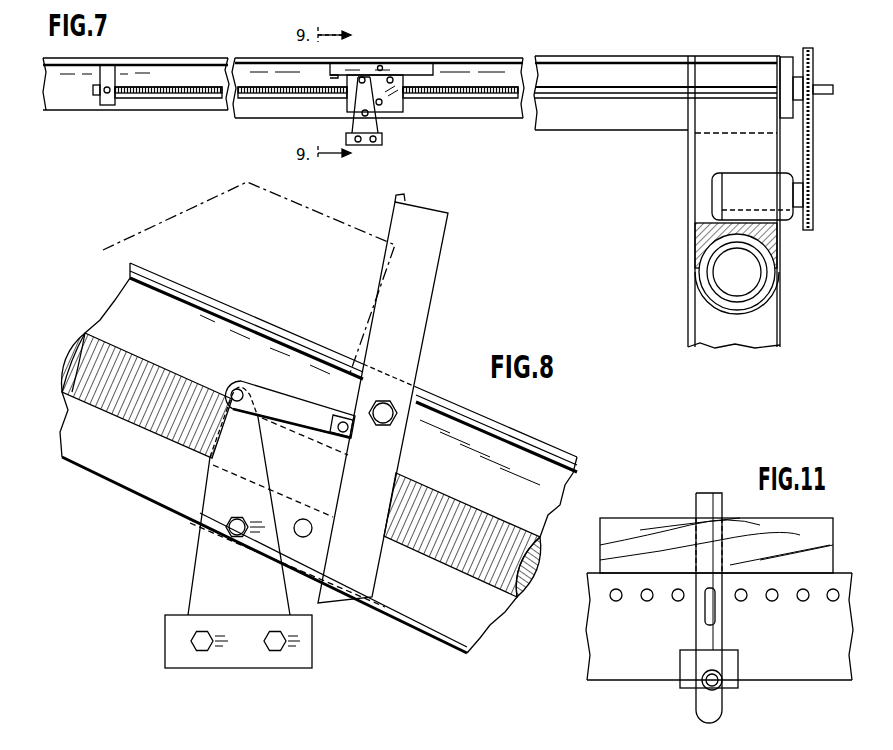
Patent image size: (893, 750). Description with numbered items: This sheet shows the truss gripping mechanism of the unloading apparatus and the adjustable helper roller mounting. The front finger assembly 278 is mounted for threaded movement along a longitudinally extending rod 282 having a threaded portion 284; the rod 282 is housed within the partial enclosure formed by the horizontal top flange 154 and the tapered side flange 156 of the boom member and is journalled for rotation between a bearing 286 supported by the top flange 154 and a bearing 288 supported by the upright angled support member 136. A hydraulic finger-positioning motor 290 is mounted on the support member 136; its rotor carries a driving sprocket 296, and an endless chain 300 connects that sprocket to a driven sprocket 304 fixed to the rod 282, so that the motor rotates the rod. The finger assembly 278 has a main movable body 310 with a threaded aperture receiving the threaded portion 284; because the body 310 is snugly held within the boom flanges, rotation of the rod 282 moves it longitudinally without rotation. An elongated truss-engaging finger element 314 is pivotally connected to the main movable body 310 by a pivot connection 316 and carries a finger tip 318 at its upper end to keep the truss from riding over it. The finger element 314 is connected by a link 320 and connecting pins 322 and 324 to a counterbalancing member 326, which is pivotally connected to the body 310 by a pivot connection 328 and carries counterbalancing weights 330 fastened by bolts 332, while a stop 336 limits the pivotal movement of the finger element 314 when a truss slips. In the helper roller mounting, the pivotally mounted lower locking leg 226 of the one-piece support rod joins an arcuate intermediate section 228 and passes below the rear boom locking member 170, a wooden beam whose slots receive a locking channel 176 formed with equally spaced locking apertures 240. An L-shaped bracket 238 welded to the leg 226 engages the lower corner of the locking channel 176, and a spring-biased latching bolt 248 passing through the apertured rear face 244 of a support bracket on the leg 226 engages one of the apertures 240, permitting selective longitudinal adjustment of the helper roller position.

In FIG. 7, the upright angled support member 136 is at (688, 196).
In FIG. 7, the top flange 154 is at (205, 58).
In FIG. 7, the side flange 156 is at (195, 110).
In FIG. 11, the rear boom locking member 170 is at (600, 550).
In FIG. 11, the locking channel 176 is at (650, 668).
In FIG. 11, the lower locking leg 226 is at (718, 716).
In FIG. 11, the arcuate intermediate section 228 is at (696, 498).
In FIG. 11, the L-shaped bracket 238 is at (738, 690).
In FIG. 11, the locking apertures 240 is at (660, 612).
In FIG. 11, the apertured rear face 244 is at (724, 642).
In FIG. 11, the latching bolt 248 is at (724, 598).
In FIG. 7, the front finger assembly 278 is at (400, 128).
In FIG. 7, the longitudinally extending rod 282 is at (575, 72).
In FIG. 7, the threaded portion 284 is at (452, 88).
In FIG. 8, the threaded portion 284 is at (513, 600).
In FIG. 7, the bearing 286 is at (108, 105).
In FIG. 7, the bearing 288 is at (795, 57).
In FIG. 7, the front hydraulic finger-positioning motor 290 is at (742, 173).
In FIG. 7, the driving sprocket 296 is at (810, 208).
In FIG. 7, the endless chain 300 is at (813, 150).
In FIG. 7, the driven sprocket 304 is at (812, 80).
In FIG. 7, the main movable body 310 is at (405, 96).
In FIG. 8, the main movable body 310 is at (388, 578).
In FIG. 7, the elongated truss-engaging finger element 314 is at (360, 72).
In FIG. 8, the elongated truss-engaging finger element 314 is at (428, 330).
In FIG. 7, the pivot connection 316 is at (382, 68).
In FIG. 8, the pivot connection 316 is at (395, 405).
In FIG. 7, the finger tip 318 is at (330, 72).
In FIG. 8, the finger tip 318 is at (396, 197).
In FIG. 8, the link 320 is at (305, 402).
In FIG. 8, the connecting pin 322 is at (236, 389).
In FIG. 8, the connecting pin 324 is at (344, 421).
In FIG. 7, the counterbalancing member 326 is at (362, 145).
In FIG. 8, the counterbalancing member 326 is at (195, 578).
In FIG. 8, the pivot connection 328 is at (240, 516).
In FIG. 8, the counterbalancing weights 330 is at (250, 668).
In FIG. 8, the bolts 332 is at (286, 645).
In FIG. 8, the stop 336 is at (304, 518).